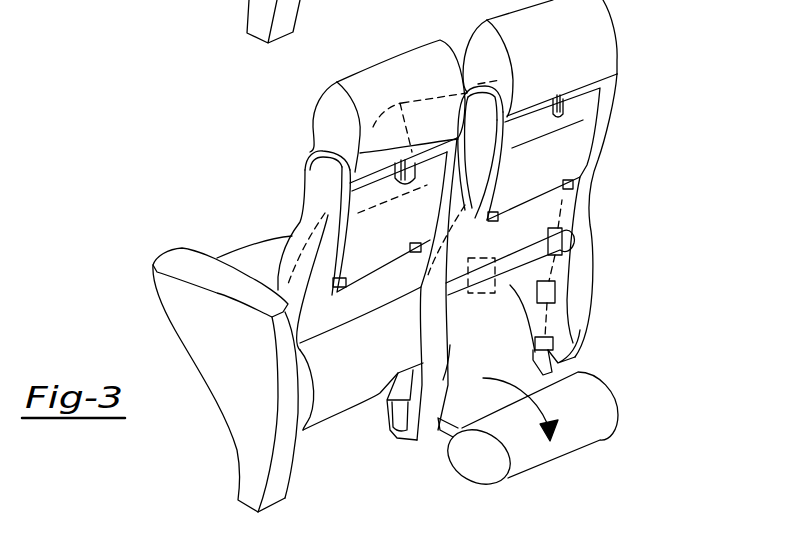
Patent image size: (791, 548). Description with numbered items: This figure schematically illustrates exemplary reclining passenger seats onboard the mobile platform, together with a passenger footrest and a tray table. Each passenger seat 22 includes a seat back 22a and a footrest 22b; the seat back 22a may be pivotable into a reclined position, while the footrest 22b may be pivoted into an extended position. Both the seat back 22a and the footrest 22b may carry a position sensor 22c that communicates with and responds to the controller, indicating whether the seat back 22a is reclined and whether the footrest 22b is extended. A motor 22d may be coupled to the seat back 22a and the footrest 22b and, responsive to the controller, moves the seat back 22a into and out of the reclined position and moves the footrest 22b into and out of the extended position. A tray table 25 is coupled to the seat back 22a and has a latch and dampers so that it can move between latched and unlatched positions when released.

The passenger seat 22 is at (621, 63).
The seat back 22a is at (607, 103).
The footrest 22b is at (580, 432).
The position sensor 22c is at (562, 252).
The motor 22d is at (558, 294).
The tray table 25 is at (573, 147).